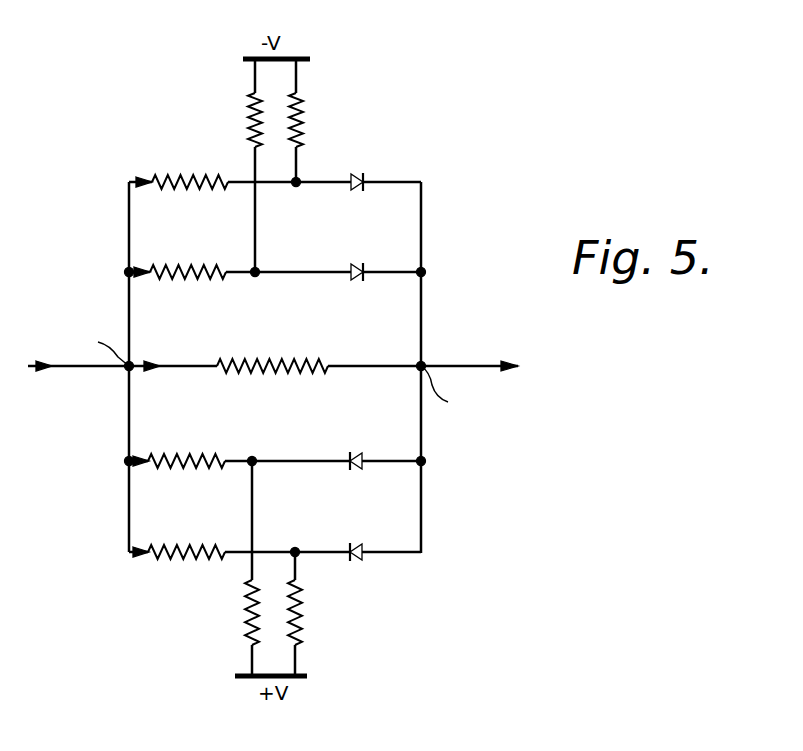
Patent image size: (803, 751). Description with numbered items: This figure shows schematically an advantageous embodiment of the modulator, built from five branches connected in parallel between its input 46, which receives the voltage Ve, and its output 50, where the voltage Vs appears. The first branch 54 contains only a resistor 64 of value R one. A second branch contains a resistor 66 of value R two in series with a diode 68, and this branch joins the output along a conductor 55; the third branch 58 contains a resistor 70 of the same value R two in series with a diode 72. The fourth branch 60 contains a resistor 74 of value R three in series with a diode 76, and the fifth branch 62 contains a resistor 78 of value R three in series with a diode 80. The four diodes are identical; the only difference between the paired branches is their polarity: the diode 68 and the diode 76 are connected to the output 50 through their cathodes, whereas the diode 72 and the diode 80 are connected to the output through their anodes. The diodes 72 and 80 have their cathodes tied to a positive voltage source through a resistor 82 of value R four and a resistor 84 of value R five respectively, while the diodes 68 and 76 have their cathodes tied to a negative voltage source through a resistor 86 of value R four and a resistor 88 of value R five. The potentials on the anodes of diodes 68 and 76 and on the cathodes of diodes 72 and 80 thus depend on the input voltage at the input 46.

The input 46 is at (126, 368).
The output 50 is at (424, 366).
The branch 54 is at (348, 366).
The conductor from diode 68 to output 55 is at (380, 272).
The branch 58 is at (383, 461).
The branch 60 is at (403, 182).
The branch 62 is at (377, 550).
The resistor 64 is at (268, 378).
The resistor 66 is at (194, 281).
The diode 68 is at (352, 268).
The resistor 70 is at (203, 470).
The diode 72 is at (356, 456).
The resistor 74 is at (205, 189).
The diode 76 is at (356, 175).
The resistor 78 is at (186, 564).
The diode 80 is at (354, 546).
The resistor 82 is at (247, 630).
The resistor 84 is at (298, 630).
The resistor 86 is at (251, 98).
The resistor 88 is at (302, 104).